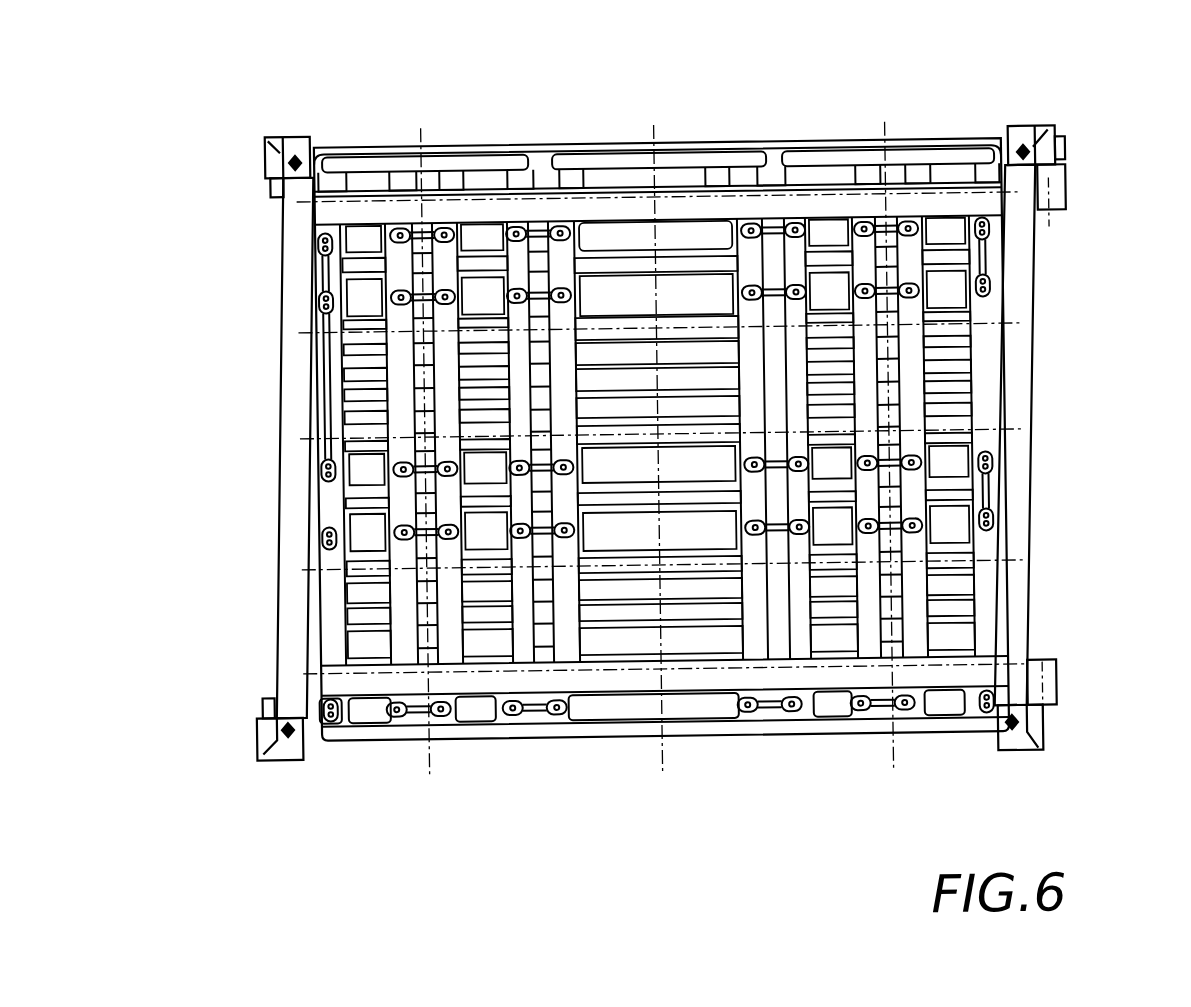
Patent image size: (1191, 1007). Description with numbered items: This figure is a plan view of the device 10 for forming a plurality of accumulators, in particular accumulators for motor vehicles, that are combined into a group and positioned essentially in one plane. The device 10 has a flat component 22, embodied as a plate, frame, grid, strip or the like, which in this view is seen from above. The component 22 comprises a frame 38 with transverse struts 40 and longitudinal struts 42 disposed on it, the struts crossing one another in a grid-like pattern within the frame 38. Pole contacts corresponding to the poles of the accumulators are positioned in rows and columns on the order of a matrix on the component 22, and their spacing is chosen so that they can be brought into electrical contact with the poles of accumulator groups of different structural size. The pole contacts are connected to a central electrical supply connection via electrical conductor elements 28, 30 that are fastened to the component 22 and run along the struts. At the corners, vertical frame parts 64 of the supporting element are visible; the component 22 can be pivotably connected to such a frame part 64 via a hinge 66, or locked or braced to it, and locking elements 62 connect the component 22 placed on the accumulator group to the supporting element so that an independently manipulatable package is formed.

The device 10 is at (216, 464).
The flat component 22 is at (606, 173).
The electrical conductor element 28 is at (402, 296).
The electrical conductor element 30 is at (401, 531).
The frame 38 is at (811, 202).
The transverse strut 40 is at (642, 265).
The longitudinal strut 42 is at (444, 630).
The locking element 62 is at (275, 185).
The vertical frame part 64 is at (1034, 135).
The hinge 66 is at (1072, 191).